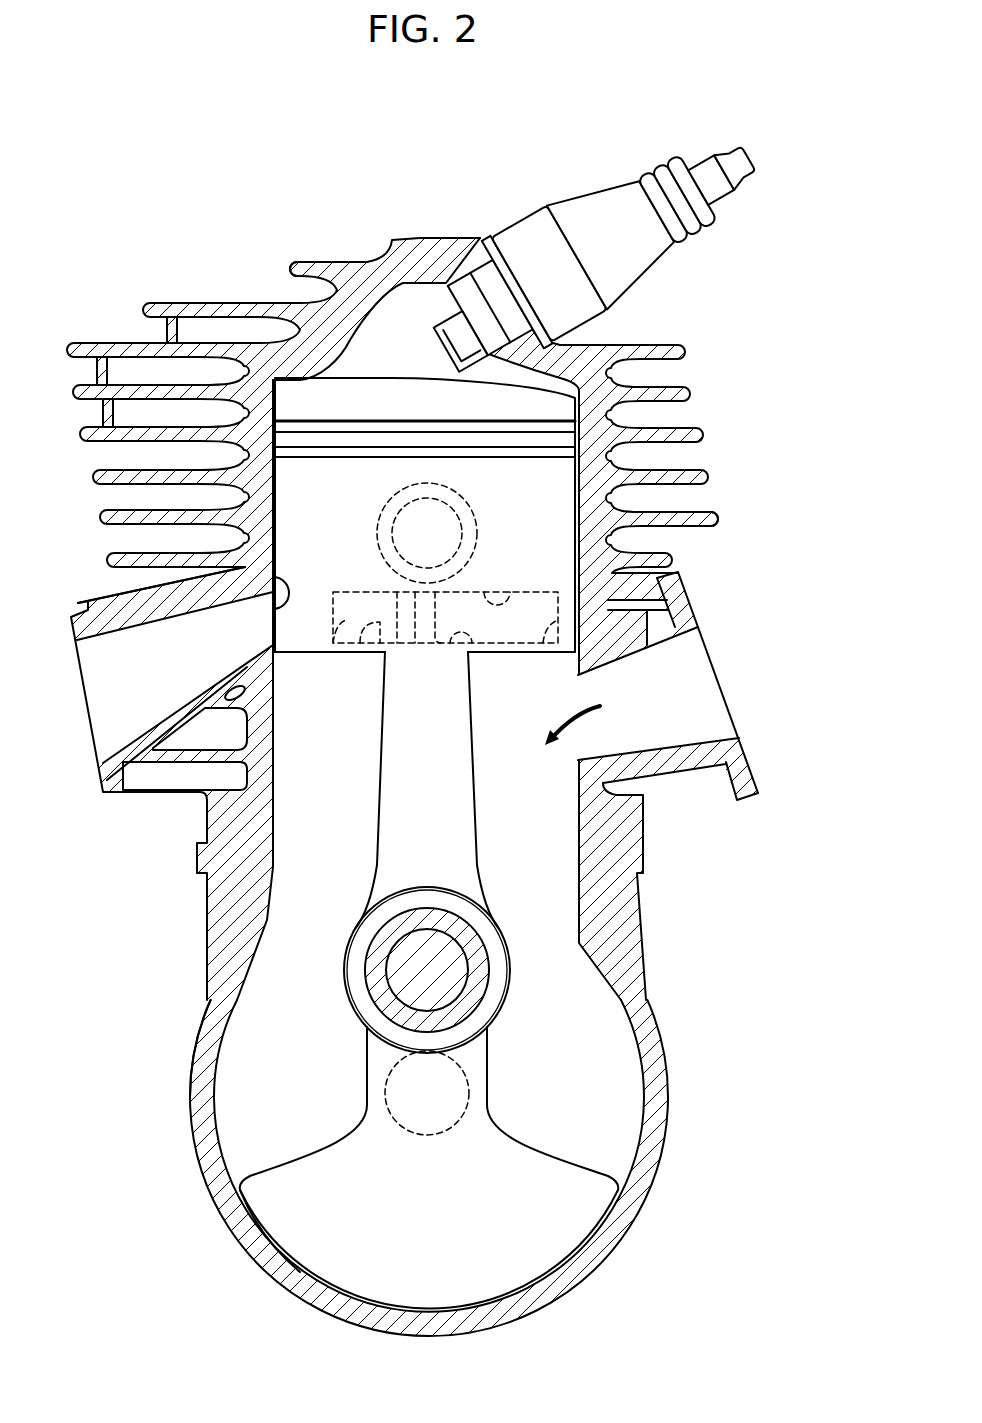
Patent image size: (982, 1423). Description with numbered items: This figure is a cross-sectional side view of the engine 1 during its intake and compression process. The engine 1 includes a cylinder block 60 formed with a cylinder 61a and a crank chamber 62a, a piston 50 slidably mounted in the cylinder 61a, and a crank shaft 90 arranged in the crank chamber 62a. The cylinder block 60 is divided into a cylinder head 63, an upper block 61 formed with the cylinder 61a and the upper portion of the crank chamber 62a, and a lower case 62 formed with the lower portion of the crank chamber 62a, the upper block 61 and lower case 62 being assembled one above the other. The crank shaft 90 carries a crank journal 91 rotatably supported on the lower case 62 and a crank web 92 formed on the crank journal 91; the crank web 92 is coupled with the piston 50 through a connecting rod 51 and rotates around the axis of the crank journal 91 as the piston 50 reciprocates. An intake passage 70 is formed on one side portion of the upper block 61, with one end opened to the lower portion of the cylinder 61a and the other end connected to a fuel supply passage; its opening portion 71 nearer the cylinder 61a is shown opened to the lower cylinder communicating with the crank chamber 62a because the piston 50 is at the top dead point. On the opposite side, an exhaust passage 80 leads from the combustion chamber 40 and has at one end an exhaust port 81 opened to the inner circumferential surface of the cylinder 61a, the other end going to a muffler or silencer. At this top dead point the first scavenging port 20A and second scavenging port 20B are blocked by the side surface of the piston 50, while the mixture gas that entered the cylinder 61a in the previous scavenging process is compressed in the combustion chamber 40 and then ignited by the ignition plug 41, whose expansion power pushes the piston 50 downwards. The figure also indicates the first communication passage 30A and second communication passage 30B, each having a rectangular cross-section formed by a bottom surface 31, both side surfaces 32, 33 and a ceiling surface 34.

The engine 1 is at (170, 188).
The first scavenging port 20A is at (372, 587).
The second scavenging port 20B is at (527, 585).
The first communication passage 30A is at (337, 643).
The second communication passage 30B is at (503, 643).
The bottom surface 31 is at (457, 620).
The side surface 32 is at (437, 607).
The side surface 33 is at (543, 620).
The ceiling surface 34 is at (513, 636).
The combustion chamber 40 is at (388, 316).
The ignition plug 41 is at (530, 224).
The piston 50 is at (407, 396).
The connecting rod 51 is at (378, 866).
The cylinder block 60 is at (647, 1138).
The upper block 61 is at (591, 390).
The cylinder 61a is at (606, 513).
The lower case 62 is at (647, 1138).
The crank chamber 62a is at (247, 1073).
The cylinder head 63 is at (347, 278).
The intake passage 70 is at (677, 738).
The opening portion 71 is at (577, 752).
The exhaust passage 80 is at (147, 722).
The exhaust port 81 is at (268, 590).
The crank shaft 90 is at (270, 1143).
The crank journal 91 is at (440, 1090).
The crank web 92 is at (288, 1202).